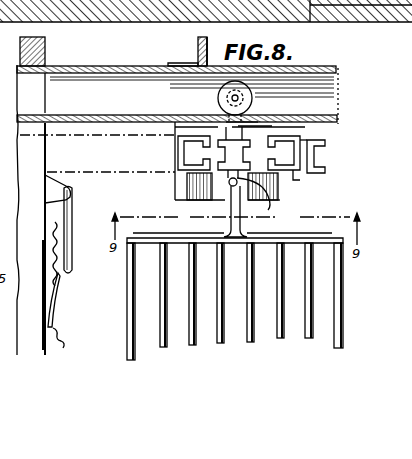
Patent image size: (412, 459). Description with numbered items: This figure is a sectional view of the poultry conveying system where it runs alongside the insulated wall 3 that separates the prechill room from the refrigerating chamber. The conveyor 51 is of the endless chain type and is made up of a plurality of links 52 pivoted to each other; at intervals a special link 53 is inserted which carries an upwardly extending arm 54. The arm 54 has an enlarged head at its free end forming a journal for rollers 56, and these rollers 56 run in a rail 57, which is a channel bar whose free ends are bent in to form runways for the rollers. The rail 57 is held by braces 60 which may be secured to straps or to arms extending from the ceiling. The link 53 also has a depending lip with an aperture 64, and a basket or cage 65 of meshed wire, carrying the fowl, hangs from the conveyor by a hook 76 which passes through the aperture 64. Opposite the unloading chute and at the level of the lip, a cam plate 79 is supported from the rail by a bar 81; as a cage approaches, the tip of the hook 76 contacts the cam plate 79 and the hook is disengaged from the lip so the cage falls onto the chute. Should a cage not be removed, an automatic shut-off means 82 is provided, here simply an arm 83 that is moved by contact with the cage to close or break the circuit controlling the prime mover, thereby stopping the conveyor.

The insulated wall 3 is at (46, 55).
The braces 60 is at (198, 50).
The rail 57 is at (126, 63).
The rollers 56 is at (217, 99).
The upwardly extending arm 54 is at (238, 128).
The link 53 is at (262, 130).
The bar 81 is at (190, 153).
The conveyor 51 is at (326, 146).
The links 52 is at (302, 180).
The cam plate 79 is at (195, 187).
The arm 83 is at (226, 190).
The apertures 64 is at (269, 210).
The hooks 76 is at (230, 218).
The basket or cage 65 is at (344, 290).
The automatic shut-off means 82 is at (73, 195).